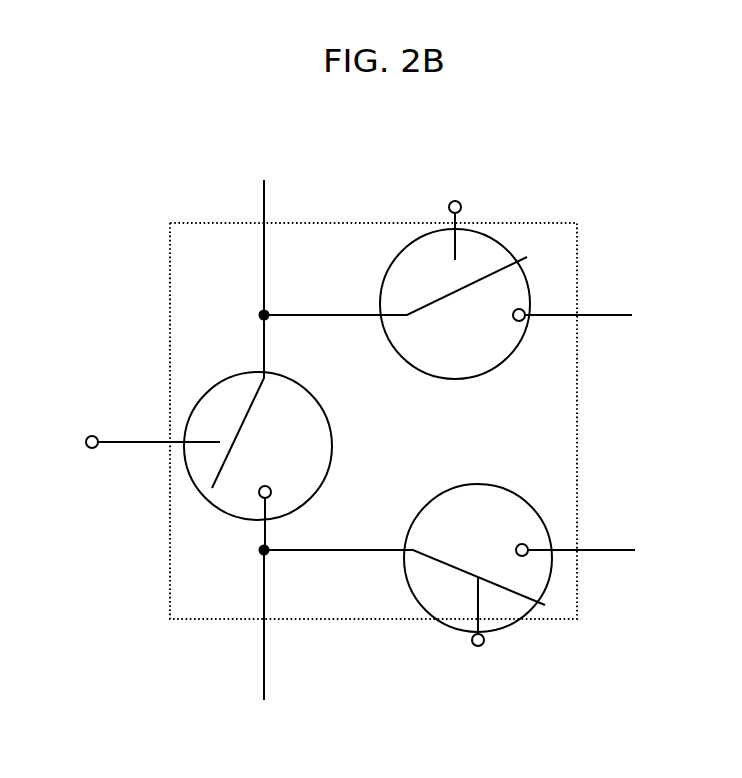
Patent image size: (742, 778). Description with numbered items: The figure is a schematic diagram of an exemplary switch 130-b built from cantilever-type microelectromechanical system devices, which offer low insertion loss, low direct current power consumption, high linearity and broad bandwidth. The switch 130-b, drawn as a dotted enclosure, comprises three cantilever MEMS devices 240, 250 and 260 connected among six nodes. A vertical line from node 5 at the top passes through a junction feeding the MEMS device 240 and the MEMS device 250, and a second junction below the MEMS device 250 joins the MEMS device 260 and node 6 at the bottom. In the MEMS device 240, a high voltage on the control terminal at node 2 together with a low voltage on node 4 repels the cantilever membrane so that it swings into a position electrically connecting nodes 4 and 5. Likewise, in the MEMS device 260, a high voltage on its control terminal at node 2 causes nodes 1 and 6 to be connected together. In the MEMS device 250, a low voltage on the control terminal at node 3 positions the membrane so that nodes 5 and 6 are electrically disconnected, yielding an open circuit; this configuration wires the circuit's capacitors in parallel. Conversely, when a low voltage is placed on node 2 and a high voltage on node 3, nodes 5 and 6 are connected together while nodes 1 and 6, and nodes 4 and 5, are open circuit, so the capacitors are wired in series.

The switch 130-b is at (576, 273).
The cantilever MEMS device 240 is at (481, 362).
The cantilever MEMS device 250 is at (325, 458).
The cantilever MEMS device 260 is at (497, 528).
The node 1 is at (588, 548).
The node 2 is at (466, 422).
The node 3 is at (133, 442).
The node 4 is at (586, 310).
The node 5 is at (262, 229).
The node 6 is at (264, 645).